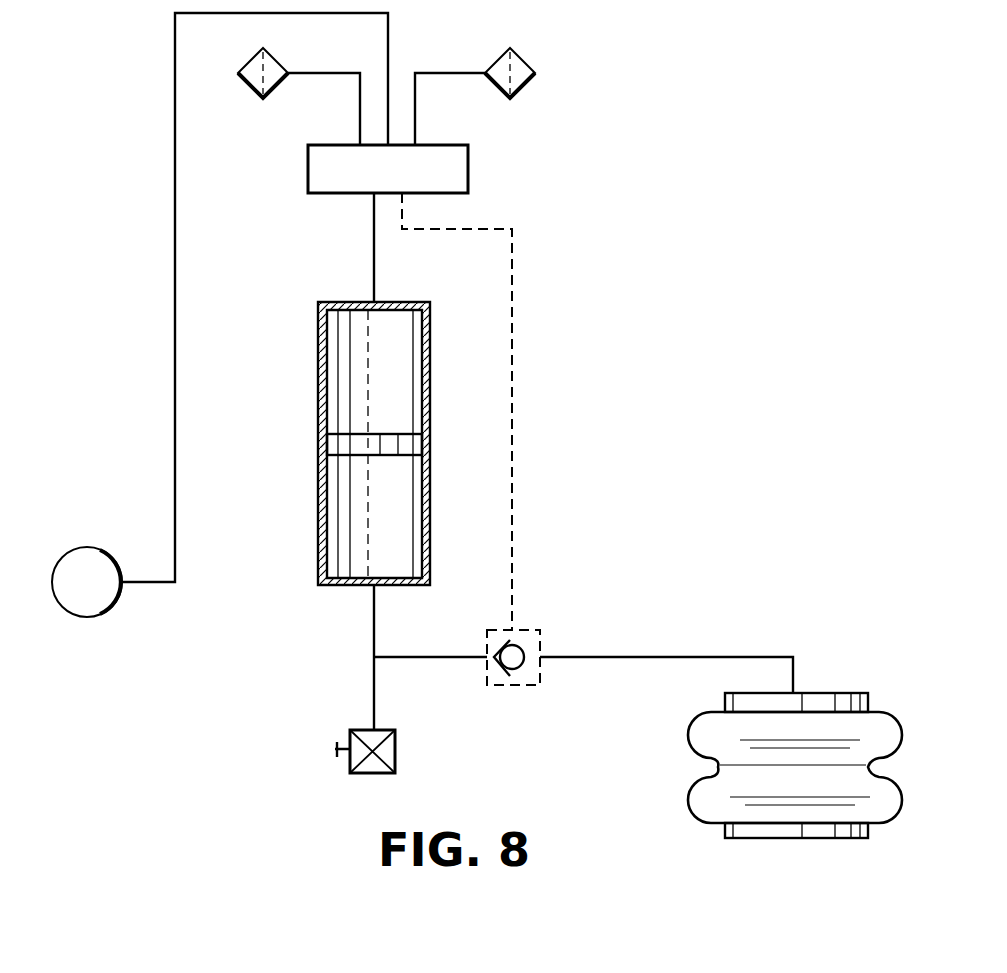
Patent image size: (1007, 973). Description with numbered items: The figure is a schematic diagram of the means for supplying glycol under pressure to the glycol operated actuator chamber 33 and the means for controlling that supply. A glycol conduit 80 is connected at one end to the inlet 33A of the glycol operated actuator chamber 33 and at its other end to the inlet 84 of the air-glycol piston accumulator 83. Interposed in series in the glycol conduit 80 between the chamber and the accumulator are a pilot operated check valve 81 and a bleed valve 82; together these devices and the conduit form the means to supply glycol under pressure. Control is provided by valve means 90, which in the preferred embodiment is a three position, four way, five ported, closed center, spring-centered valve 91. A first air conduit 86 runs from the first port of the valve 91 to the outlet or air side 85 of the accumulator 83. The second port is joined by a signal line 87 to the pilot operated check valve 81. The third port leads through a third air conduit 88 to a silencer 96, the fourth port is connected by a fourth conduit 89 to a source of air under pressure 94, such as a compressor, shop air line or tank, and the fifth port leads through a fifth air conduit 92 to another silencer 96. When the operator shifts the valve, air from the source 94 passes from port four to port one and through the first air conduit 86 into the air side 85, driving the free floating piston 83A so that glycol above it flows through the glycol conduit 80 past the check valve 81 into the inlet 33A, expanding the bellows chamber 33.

The glycol operated actuator chamber 33 is at (697, 743).
The inlet of the glycol operated actuator chamber 33A is at (795, 693).
The glycol conduit 80 is at (436, 660).
The pilot operated check valve 81 is at (520, 687).
The bleed valve 82 is at (355, 777).
The air-glycol piston accumulator 83 is at (318, 493).
The free floating piston 83A is at (346, 440).
The inlet of the air-glycol piston accumulator 84 is at (372, 590).
The outlet or air side of the air-glycol piston accumulator 85 is at (372, 300).
The first air conduit 86 is at (374, 257).
The signal line 87 is at (515, 326).
The third air conduit 88 is at (312, 75).
The fourth conduit 89 is at (174, 293).
The valve means 90 is at (306, 178).
The three position, four way, five ported, closed center, spring-centered valve 91 is at (468, 172).
The fifth air conduit 92 is at (453, 73).
The source of air under pressure 94 is at (80, 615).
The silencer 96 is at (250, 84).